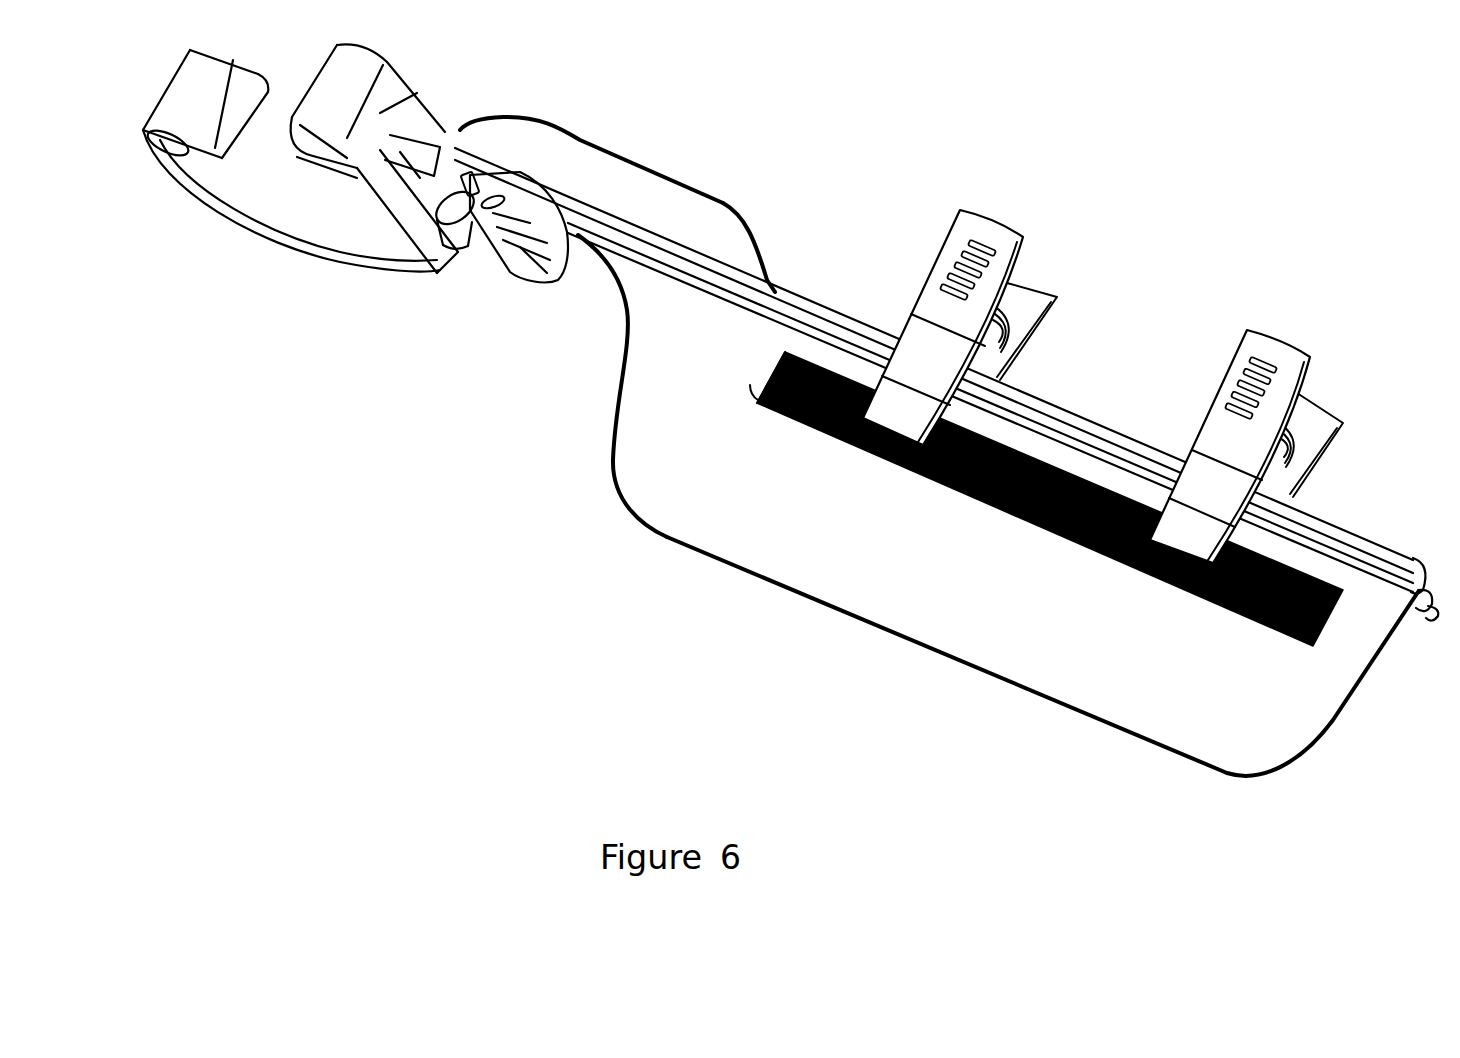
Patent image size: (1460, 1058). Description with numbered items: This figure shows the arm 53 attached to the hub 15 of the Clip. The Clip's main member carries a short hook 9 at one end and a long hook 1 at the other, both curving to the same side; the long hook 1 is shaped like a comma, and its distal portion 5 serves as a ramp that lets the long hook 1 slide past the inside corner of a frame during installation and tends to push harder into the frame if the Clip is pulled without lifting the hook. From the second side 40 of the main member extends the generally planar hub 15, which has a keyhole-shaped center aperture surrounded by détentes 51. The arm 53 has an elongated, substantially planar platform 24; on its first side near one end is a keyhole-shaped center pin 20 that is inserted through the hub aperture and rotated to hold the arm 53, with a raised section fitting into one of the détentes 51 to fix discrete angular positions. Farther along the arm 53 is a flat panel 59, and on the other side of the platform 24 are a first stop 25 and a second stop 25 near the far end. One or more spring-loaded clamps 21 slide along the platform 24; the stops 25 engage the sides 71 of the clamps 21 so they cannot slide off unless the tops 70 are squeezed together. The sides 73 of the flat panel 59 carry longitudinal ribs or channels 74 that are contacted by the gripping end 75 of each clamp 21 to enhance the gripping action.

The long hook 1 is at (153, 148).
The short hook 9 is at (333, 68).
The hub 15 is at (450, 136).
The second side of the main member 40 is at (403, 197).
The keyhole-shaped center pin 20 is at (447, 250).
The détentes 51 is at (522, 210).
The distal portion 5 is at (565, 280).
The stop 25 is at (623, 172).
The platform 24 is at (810, 300).
The spring-loaded clamps 21 is at (1114, 381).
The tops of the clamps 70 is at (988, 224).
The sides of the clamps 71 is at (1260, 484).
The longitudinal ribs or channels 74 is at (783, 355).
The gripping end 75 is at (910, 478).
The arm 53 is at (962, 505).
The flat panel 59 is at (853, 600).
The sides of the flat panel 73 is at (1333, 697).